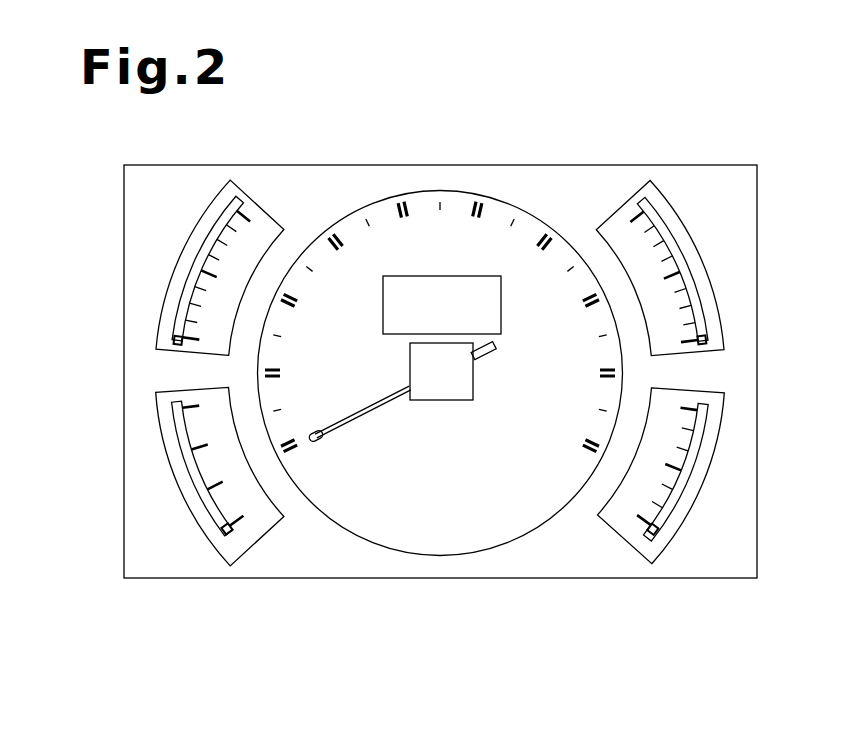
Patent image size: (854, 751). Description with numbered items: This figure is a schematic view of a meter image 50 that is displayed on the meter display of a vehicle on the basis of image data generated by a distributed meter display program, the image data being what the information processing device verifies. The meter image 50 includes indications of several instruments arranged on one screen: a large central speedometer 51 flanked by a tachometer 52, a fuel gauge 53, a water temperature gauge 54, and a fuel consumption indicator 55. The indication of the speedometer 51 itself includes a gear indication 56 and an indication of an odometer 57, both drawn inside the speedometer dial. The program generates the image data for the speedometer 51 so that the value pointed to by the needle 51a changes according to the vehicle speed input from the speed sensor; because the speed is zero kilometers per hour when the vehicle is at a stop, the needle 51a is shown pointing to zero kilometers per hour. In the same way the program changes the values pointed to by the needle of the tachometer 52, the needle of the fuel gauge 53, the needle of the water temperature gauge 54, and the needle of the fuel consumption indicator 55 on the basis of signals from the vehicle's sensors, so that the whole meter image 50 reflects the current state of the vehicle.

The meter image 50 is at (723, 162).
The speedometer 51 is at (540, 217).
The needle 51a is at (369, 411).
The tachometer 52 is at (680, 531).
The fuel gauge 53 is at (203, 214).
The water temperature gauge 54 is at (679, 215).
The fuel consumption indicator 55 is at (203, 533).
The gear indication 56 is at (474, 380).
The odometer 57 is at (502, 311).